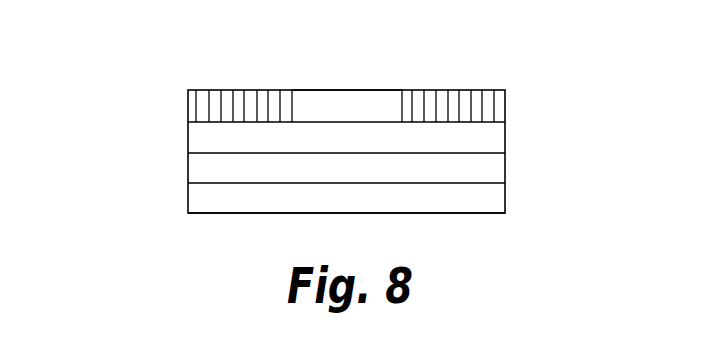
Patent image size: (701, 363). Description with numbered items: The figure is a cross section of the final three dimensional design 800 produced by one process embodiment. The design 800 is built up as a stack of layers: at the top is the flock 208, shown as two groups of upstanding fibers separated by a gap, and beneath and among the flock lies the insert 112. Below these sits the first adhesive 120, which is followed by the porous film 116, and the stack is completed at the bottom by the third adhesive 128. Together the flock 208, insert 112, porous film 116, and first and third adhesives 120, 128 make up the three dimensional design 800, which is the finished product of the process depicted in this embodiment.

The design 800 is at (158, 203).
The flock 208 is at (505, 95).
The insert 112 is at (346, 90).
The first adhesive 120 is at (505, 131).
The porous film 116 is at (505, 168).
The third adhesive 128 is at (505, 205).